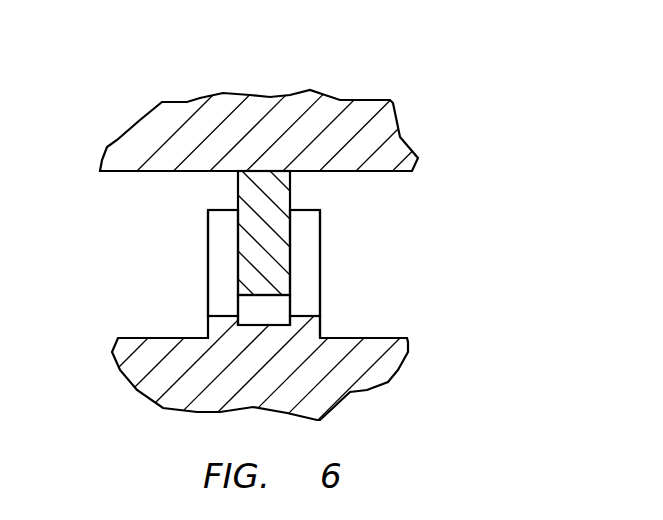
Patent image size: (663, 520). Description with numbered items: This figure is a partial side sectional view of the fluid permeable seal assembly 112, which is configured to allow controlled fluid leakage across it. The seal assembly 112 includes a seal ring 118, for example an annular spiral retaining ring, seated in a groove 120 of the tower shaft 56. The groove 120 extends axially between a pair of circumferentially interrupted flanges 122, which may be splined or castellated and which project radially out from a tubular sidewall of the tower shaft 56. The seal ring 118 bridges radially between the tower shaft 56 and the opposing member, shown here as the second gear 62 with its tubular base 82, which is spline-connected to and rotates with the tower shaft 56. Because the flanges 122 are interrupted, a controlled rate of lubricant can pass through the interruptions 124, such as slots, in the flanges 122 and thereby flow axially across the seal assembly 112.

The tower shaft 56 is at (410, 378).
The second gear 62 is at (301, 108).
The tubular base 82 is at (414, 124).
The fluid permeable seal assembly 112 is at (258, 254).
The seal ring 118 is at (303, 192).
The groove 120 is at (273, 308).
The flanges 122 is at (193, 260).
The interruptions 124 is at (222, 232).